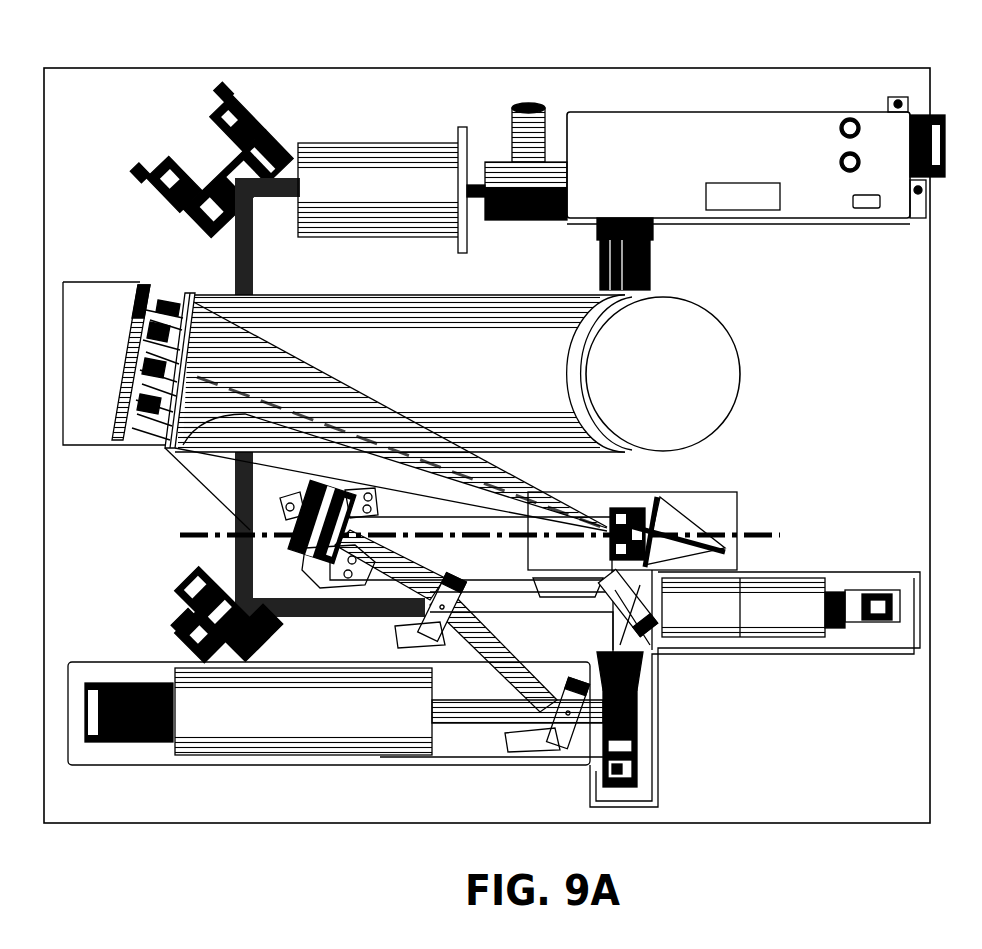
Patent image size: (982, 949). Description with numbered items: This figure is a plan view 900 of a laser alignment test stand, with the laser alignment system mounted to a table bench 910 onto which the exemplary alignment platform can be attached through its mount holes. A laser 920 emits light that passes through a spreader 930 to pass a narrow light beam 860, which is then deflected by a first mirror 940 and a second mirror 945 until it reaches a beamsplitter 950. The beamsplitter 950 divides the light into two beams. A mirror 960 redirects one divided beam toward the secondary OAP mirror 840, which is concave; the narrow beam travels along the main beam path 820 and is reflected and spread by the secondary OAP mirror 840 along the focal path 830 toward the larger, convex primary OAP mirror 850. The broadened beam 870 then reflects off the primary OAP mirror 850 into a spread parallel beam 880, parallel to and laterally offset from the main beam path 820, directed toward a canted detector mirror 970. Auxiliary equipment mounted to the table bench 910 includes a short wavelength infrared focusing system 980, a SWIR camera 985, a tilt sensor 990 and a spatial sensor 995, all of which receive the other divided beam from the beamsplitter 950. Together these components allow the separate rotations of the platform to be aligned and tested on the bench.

The plan view 900 is at (152, 50).
The table bench 910 is at (123, 129).
The mirror 940 is at (192, 214).
The light beam 860 is at (258, 272).
The spreader 930 is at (389, 216).
The laser 920 is at (694, 164).
The spread parallel beam 880 is at (499, 377).
The broadened beam 870 is at (338, 464).
The canted detector mirror 970 is at (694, 377).
The primary OAP mirror 850 is at (170, 450).
The main beam path 820 is at (180, 538).
The focal path 830 is at (578, 506).
The secondary OAP mirror 840 is at (662, 506).
The mirror 945 is at (185, 616).
The mirror 960 is at (335, 595).
The beamsplitter 950 is at (450, 640).
The tilt sensor 990 is at (640, 722).
The spatial sensor 995 is at (729, 626).
The SWIR focusing system 980 is at (356, 732).
The SWIR camera 985 is at (130, 745).